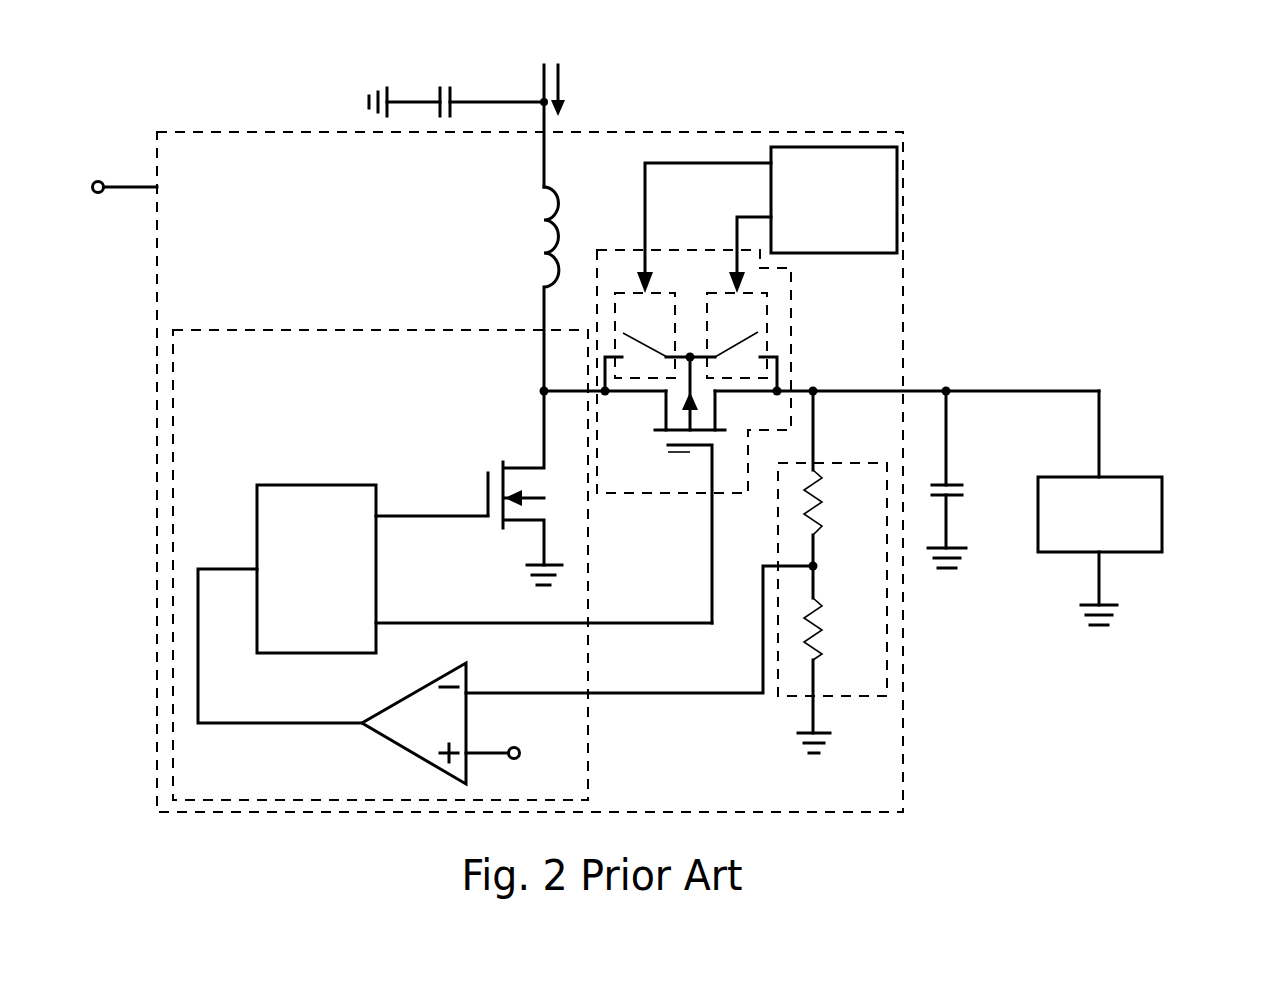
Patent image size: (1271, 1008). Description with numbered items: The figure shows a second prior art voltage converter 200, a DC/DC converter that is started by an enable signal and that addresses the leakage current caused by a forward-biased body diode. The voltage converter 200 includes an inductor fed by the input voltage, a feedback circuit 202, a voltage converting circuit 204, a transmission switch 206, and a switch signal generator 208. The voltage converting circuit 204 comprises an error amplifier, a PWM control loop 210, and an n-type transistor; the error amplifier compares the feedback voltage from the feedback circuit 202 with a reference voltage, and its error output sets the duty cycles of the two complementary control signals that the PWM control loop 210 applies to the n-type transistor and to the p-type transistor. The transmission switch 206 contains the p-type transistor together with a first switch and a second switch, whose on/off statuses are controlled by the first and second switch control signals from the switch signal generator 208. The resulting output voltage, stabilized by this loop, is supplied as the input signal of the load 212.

The voltage converter 200 is at (975, 162).
The feedback circuit 202 is at (887, 662).
The voltage converting circuit 204 is at (588, 725).
The transmission switch 206 is at (672, 493).
The switch signal generator 208 is at (834, 253).
The PWM control loop 210 is at (316, 485).
The load 212 is at (1162, 515).